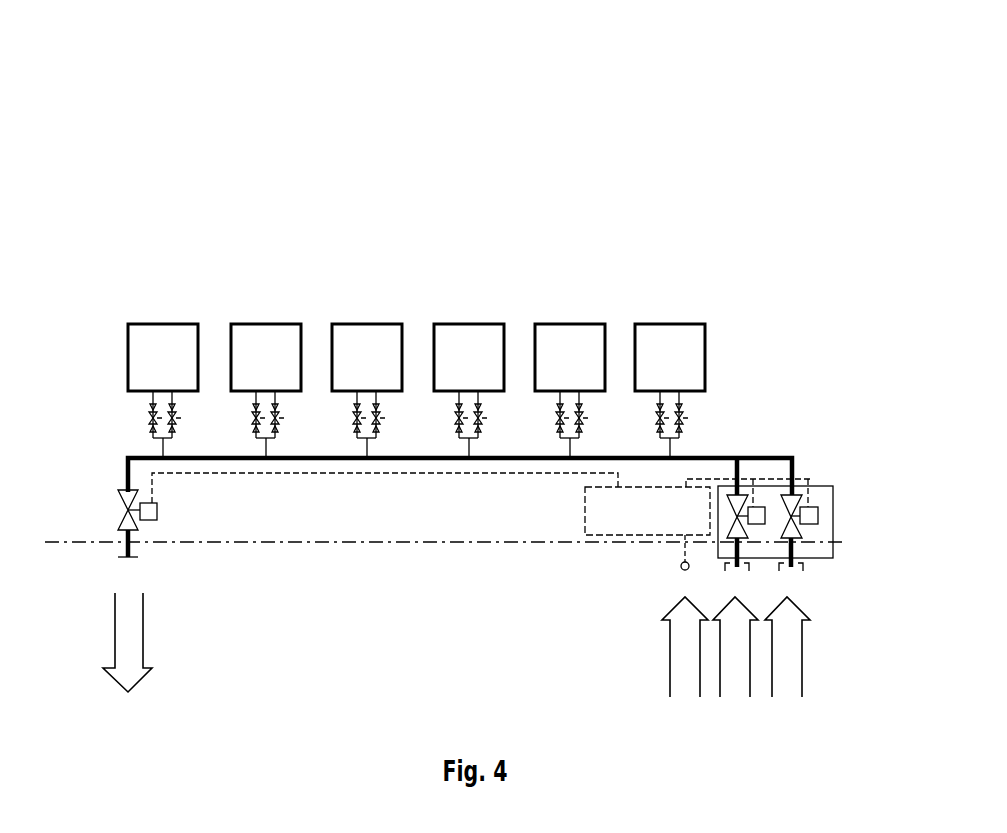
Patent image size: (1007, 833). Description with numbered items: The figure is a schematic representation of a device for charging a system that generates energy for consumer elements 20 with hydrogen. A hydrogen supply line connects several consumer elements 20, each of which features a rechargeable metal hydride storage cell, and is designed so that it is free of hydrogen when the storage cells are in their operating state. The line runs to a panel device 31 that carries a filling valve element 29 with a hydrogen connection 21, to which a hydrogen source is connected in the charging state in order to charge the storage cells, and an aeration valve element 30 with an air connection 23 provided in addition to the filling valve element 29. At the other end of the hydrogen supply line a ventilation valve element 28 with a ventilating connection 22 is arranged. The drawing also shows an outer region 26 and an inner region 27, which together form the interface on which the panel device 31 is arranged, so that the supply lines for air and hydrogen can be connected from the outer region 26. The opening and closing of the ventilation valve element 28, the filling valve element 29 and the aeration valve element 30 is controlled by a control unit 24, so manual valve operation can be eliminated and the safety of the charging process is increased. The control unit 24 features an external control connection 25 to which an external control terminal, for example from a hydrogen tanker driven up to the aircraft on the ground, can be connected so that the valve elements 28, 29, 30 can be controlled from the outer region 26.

The consumer element 20 is at (165, 348).
The hydrogen connection 21 is at (735, 647).
The ventilating connection 22 is at (127, 642).
The air connection 23 is at (787, 647).
The control unit 24 is at (647, 528).
The external control connection 25 is at (685, 647).
The outer region 26 is at (446, 574).
The inner region 27 is at (460, 500).
The ventilation valve element 28 is at (130, 518).
The filling valve element 29 is at (760, 510).
The aeration valve element 30 is at (815, 510).
The panel device 31 is at (835, 558).